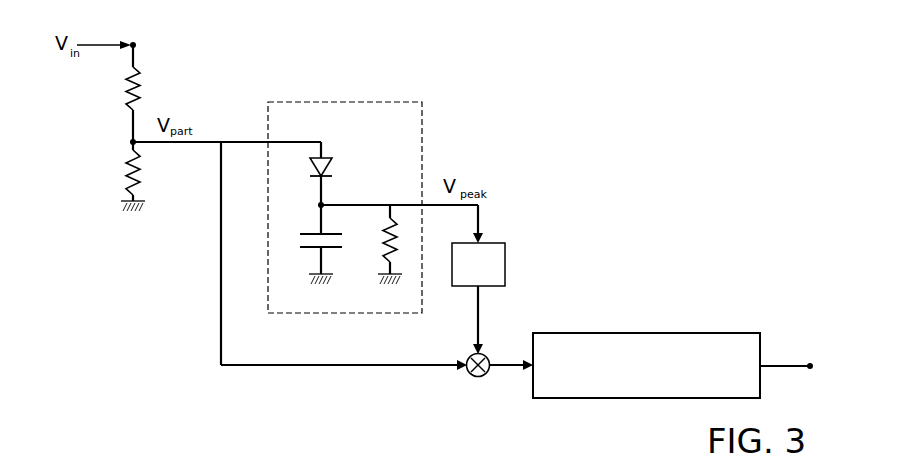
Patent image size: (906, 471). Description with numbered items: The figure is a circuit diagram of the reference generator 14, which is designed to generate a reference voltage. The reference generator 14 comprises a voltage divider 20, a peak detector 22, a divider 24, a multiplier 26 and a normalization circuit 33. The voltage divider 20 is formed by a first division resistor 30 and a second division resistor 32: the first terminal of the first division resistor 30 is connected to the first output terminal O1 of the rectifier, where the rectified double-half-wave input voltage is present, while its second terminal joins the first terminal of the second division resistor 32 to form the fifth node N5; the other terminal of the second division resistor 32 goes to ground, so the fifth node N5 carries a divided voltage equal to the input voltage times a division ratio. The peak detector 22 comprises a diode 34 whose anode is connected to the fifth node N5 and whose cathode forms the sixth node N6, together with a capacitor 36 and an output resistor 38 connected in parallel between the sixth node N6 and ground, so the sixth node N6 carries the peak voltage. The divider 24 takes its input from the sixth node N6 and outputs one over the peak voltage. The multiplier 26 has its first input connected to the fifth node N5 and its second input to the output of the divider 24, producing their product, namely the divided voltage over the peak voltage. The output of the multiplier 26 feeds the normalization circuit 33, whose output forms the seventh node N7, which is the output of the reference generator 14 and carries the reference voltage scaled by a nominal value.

The reference generator 14 is at (477, 110).
The voltage divider 20 is at (91, 80).
The peak detector 22 is at (387, 100).
The divider 24 is at (503, 252).
The multiplier 26 is at (478, 377).
The first division resistor 30 is at (137, 78).
The second division resistor 32 is at (128, 173).
The normalization circuit 33 is at (559, 342).
The diode 34 is at (326, 165).
The capacitor 36 is at (303, 237).
The output resistor 38 is at (386, 255).
The first output terminal O1 is at (136, 43).
The fifth node N5 is at (133, 142).
The sixth node N6 is at (321, 205).
The seventh node N7 is at (810, 366).